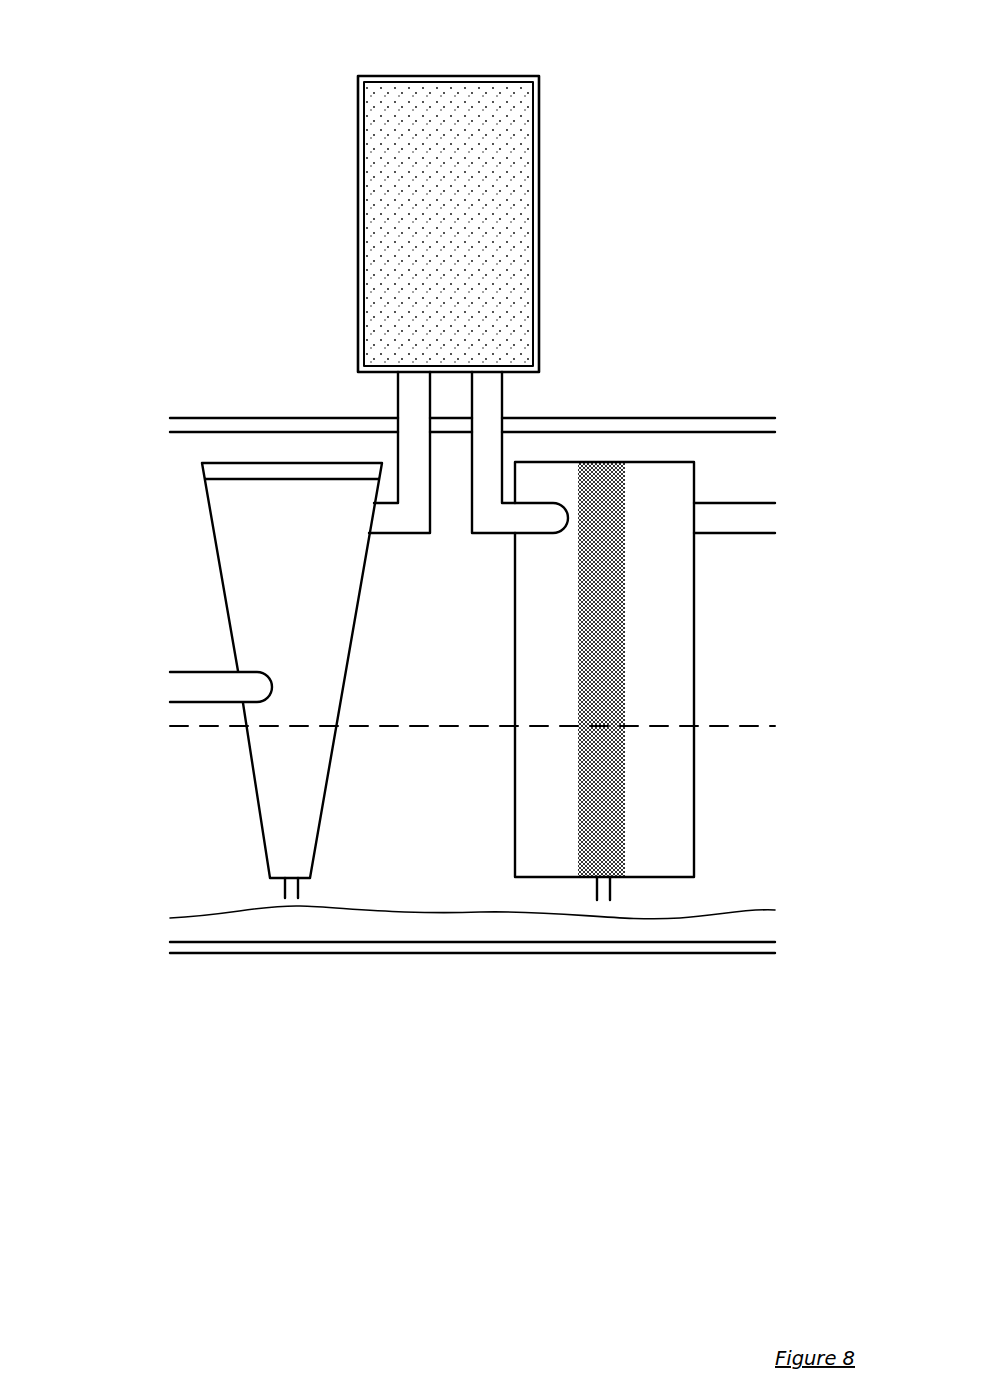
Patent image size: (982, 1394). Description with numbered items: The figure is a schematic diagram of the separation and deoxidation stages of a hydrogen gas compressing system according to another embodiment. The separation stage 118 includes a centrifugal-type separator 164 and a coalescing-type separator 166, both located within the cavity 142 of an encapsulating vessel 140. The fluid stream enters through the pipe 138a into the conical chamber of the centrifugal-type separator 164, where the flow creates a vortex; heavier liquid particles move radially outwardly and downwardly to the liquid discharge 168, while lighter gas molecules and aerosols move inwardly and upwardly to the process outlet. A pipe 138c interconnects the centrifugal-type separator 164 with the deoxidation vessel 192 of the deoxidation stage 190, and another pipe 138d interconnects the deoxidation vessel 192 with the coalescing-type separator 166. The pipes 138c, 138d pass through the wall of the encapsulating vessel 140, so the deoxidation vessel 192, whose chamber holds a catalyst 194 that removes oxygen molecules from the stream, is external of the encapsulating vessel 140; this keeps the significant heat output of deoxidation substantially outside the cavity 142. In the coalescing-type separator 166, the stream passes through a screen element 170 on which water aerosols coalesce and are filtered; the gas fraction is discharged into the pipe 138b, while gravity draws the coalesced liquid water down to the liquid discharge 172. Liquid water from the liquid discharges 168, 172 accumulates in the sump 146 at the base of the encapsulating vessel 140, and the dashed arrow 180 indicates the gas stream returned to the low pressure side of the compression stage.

The separation stage 118 is at (650, 355).
The pipe 138a is at (182, 670).
The pipe 138b is at (748, 508).
The pipe 138c is at (398, 457).
The pipe 138d is at (497, 448).
The encapsulating vessel 140 is at (190, 428).
The cavity 142 is at (185, 580).
The sump 146 is at (750, 918).
The centrifugal-type separator 164 is at (275, 515).
The coalescing-type separator 166 is at (693, 667).
The liquid discharge 168 is at (293, 912).
The screen element 170 is at (625, 562).
The liquid discharge 172 is at (608, 907).
The dashed arrow 180 is at (185, 728).
The deoxidation stage 190 is at (322, 100).
The deoxidation vessel 192 is at (495, 78).
The catalyst 194 is at (480, 165).